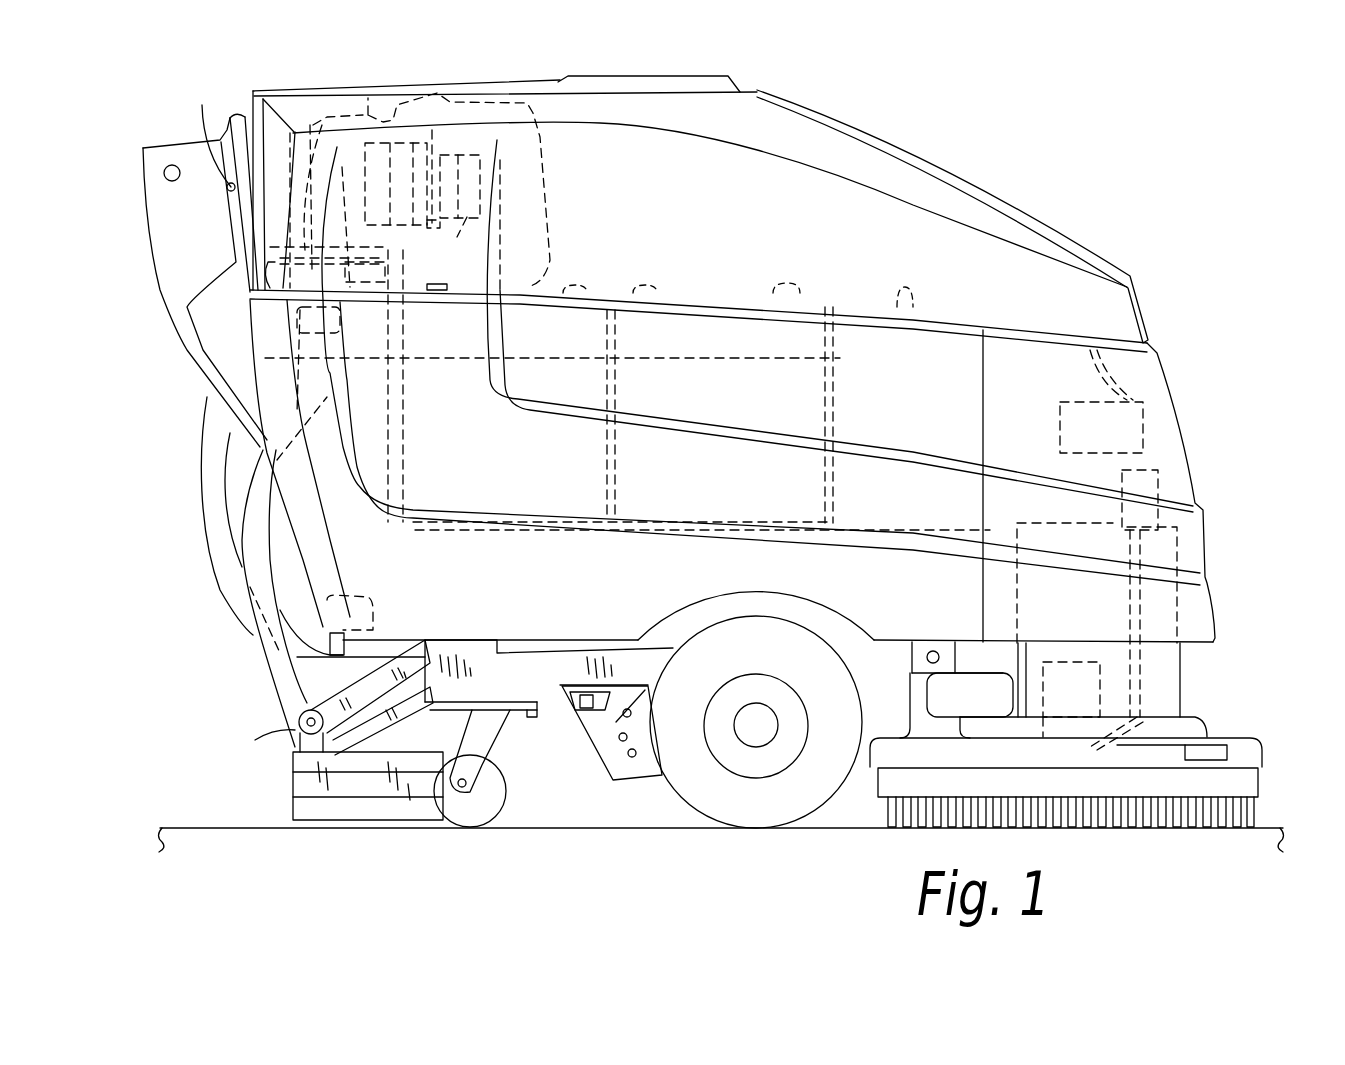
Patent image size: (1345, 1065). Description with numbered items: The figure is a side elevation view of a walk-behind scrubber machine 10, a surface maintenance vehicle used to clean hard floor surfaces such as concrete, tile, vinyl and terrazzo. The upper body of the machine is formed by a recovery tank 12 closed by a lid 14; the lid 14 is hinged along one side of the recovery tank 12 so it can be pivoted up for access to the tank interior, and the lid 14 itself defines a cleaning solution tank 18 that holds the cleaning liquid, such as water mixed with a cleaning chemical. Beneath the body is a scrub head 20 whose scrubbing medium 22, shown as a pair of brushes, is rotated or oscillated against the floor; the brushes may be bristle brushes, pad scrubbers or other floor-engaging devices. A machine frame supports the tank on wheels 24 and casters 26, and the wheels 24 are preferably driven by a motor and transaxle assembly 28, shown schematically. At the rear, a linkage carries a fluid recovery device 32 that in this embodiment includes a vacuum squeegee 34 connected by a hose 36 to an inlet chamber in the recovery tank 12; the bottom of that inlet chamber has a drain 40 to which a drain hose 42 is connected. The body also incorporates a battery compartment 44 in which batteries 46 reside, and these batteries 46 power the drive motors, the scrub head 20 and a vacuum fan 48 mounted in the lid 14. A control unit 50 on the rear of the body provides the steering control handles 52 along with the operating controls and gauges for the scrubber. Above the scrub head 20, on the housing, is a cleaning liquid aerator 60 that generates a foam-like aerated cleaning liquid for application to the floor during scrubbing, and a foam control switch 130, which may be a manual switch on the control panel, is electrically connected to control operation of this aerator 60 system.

The walk-behind scrubber machine 10 is at (1203, 453).
The recovery tank 12 is at (330, 499).
The lid 14 is at (960, 195).
The cleaning solution tank 18 is at (826, 187).
The scrub head 20 is at (535, 688).
The scrubbing medium 22 is at (1243, 812).
The wheels 24 is at (757, 807).
The casters 26 is at (497, 793).
The motor and transaxle assembly 28 is at (652, 783).
The fluid recovery device 32 is at (293, 790).
The vacuum squeegee 34 is at (313, 828).
The hose 36 is at (287, 690).
The drain 40 is at (372, 650).
The drain hose 42 is at (218, 553).
The battery compartment 44 is at (407, 453).
The batteries 46 is at (580, 327).
The vacuum fan 48 is at (410, 190).
The control unit 50 is at (177, 257).
The steering control handles 52 is at (167, 165).
The cleaning liquid aerator 60 is at (1147, 430).
The foam control switch 130 is at (202, 105).